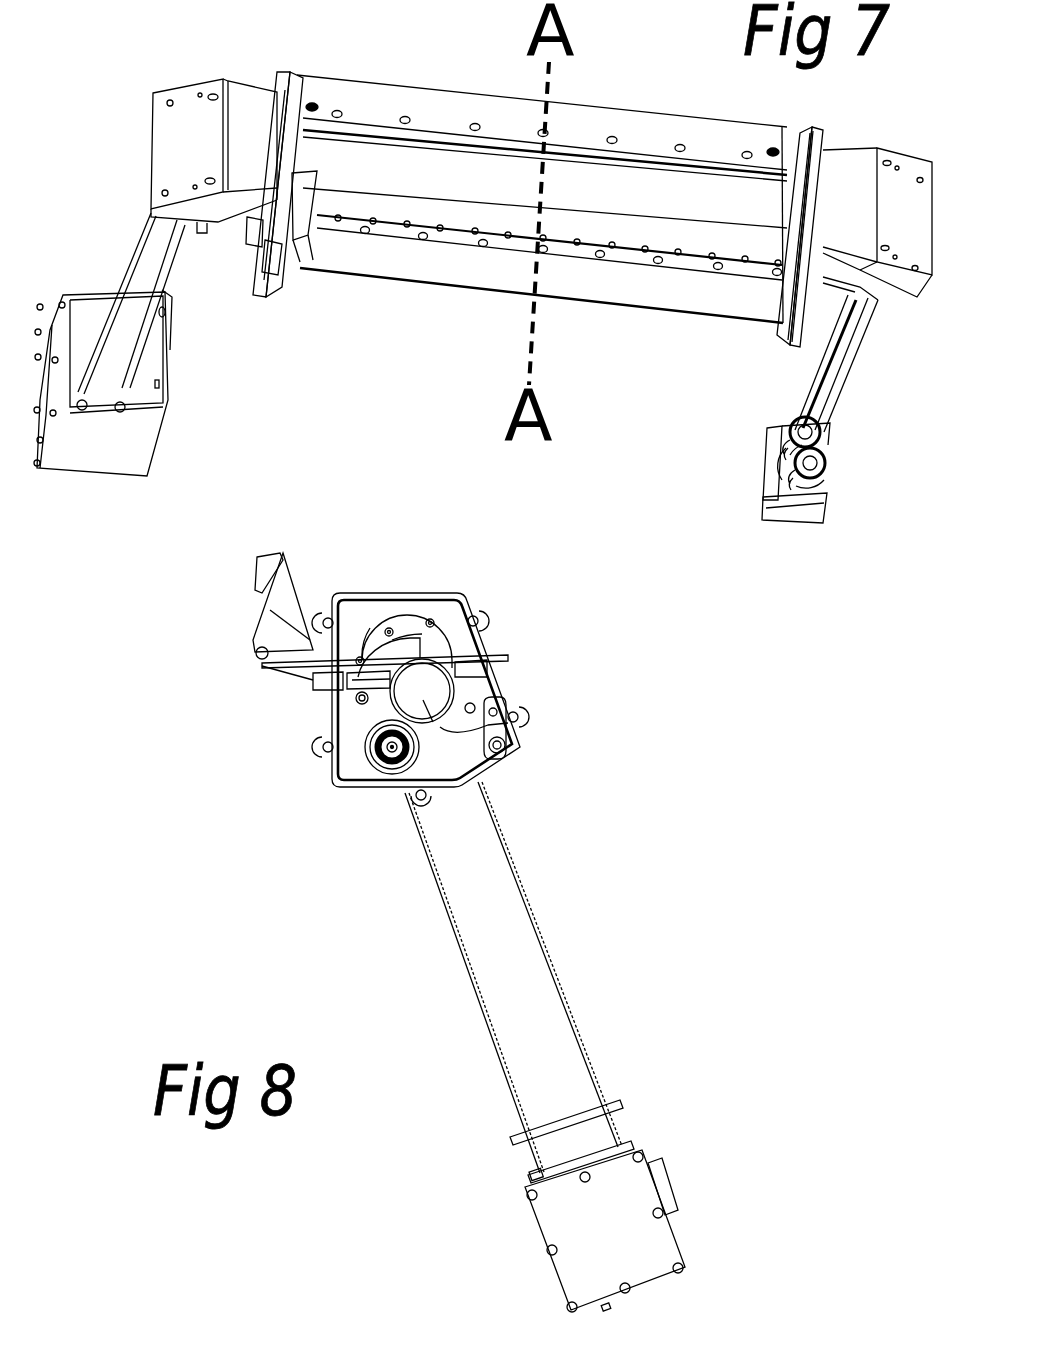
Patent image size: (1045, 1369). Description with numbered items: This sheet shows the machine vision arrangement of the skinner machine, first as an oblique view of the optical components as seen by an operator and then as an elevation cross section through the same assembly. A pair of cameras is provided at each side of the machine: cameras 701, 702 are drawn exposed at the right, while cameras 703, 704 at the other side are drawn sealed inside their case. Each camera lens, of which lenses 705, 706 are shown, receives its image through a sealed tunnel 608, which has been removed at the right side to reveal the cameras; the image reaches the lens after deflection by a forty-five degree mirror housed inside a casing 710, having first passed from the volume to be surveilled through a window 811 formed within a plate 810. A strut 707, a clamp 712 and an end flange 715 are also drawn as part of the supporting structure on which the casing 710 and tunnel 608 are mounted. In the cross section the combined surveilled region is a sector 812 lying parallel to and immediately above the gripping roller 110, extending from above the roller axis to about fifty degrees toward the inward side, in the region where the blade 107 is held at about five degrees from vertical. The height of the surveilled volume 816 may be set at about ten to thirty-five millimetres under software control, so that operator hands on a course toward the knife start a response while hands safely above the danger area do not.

In FIG. 7, the blade 107 is at (632, 138).
In FIG. 8, the blade 107 is at (486, 652).
In FIG. 7, the gripping roller 110 is at (650, 202).
In FIG. 8, the gripping roller 110 is at (506, 750).
In FIG. 7, the sealed tunnel 608 is at (108, 252).
In FIG. 8, the sealed tunnel 608 is at (553, 969).
In FIG. 7, the camera 701 is at (759, 496).
In FIG. 7, the camera 702 is at (762, 434).
In FIG. 7, the camera 703 is at (103, 425).
In FIG. 8, the camera 703 is at (526, 1231).
In FIG. 7, the camera 704 is at (95, 466).
In FIG. 8, the camera 704 is at (558, 1215).
In FIG. 7, the camera lens 705 is at (830, 480).
In FIG. 7, the camera lens 706 is at (836, 442).
In FIG. 7, the strut 707 is at (866, 352).
In FIG. 7, the casing 710 is at (151, 112).
In FIG. 7, the clamp 712 is at (379, 208).
In FIG. 7, the end flange 715 is at (310, 74).
In FIG. 8, the plate 810 is at (368, 594).
In FIG. 8, the window 811 is at (420, 616).
In FIG. 8, the sector 812 is at (270, 552).
In FIG. 8, the surveilled volume 816 is at (330, 726).